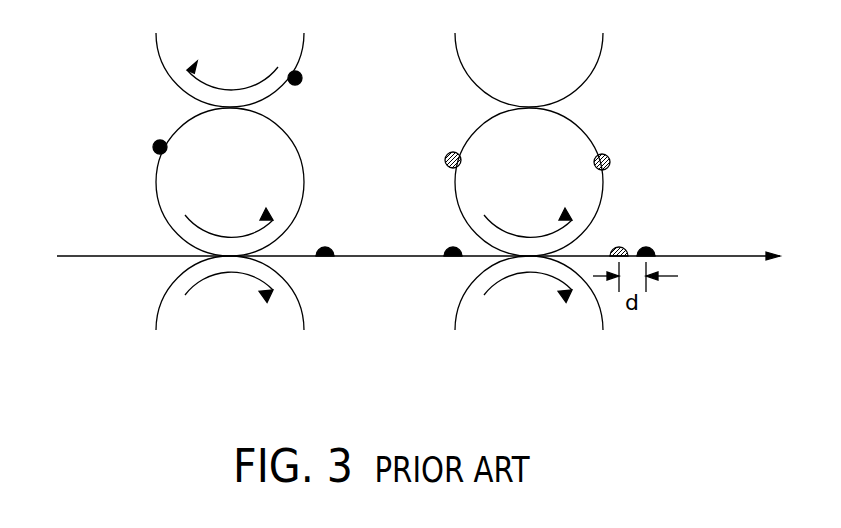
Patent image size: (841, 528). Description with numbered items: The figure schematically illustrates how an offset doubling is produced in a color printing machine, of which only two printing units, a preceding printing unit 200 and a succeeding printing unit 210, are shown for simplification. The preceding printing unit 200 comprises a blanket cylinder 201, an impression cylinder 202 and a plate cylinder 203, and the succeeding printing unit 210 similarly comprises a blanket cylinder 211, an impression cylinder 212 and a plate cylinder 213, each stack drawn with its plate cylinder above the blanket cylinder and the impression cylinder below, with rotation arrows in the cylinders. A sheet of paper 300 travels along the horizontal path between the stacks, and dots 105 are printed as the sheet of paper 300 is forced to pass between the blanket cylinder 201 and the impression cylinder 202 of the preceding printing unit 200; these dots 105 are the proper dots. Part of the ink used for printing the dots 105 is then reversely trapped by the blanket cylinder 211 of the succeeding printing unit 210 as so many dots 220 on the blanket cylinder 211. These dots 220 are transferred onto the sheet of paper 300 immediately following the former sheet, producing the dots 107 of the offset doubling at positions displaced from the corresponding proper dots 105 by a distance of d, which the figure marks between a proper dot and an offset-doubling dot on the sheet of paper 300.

The dots 105 is at (450, 247).
The dots of the offset doubling 107 is at (619, 248).
The preceding printing unit 200 is at (229, 198).
The blanket cylinder 201 is at (156, 186).
The impression cylinder 202 is at (303, 312).
The plate cylinder 203 is at (160, 58).
The succeeding printing unit 210 is at (557, 198).
The blanket cylinder 211 is at (603, 190).
The impression cylinder 212 is at (602, 318).
The plate cylinder 213 is at (600, 55).
The dots on the blanket cylinder 220 is at (448, 153).
The sheet of paper 300 is at (108, 256).